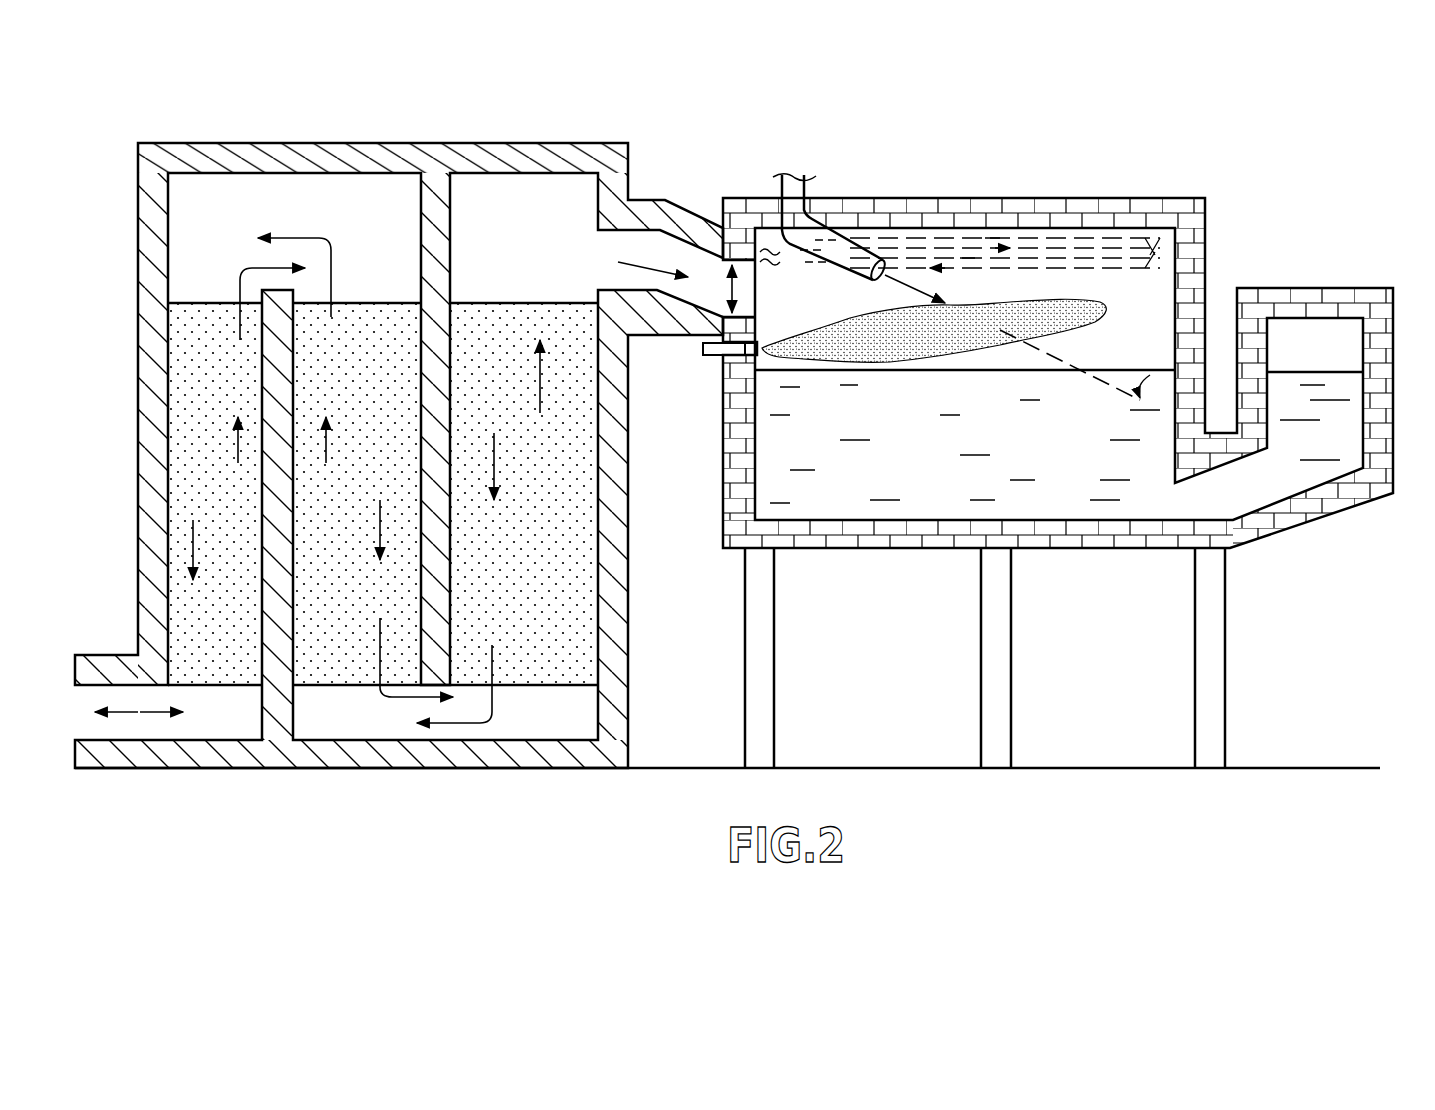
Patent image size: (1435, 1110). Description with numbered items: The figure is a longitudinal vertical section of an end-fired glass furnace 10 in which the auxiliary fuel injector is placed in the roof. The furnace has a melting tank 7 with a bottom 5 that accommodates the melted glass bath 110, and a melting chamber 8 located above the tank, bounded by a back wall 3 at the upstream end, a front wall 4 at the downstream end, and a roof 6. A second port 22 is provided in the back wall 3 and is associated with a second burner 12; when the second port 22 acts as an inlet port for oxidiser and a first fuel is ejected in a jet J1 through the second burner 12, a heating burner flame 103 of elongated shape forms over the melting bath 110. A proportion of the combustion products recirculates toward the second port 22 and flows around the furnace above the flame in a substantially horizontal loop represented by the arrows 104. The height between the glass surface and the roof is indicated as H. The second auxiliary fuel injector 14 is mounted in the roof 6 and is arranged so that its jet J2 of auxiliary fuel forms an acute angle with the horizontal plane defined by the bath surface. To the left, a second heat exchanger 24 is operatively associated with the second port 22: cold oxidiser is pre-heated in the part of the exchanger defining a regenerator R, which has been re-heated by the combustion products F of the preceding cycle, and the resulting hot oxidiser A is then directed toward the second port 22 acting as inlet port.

The back wall 3 is at (738, 481).
The front wall 4 is at (1197, 264).
The bottom 5 is at (868, 535).
The roof 6 is at (944, 200).
The melting tank 7 is at (1185, 410).
The melting chamber 8 is at (1213, 213).
The end-fired glass furnace 10 is at (1053, 188).
The second burner 12 is at (704, 352).
The second auxiliary fuel injector 14 is at (806, 189).
The second port 22 is at (745, 316).
The second heat exchanger 24 is at (469, 143).
The heating burner flame 103 is at (853, 352).
The recirculation of combustion products 104 is at (1063, 268).
The melted glass bath 110 is at (1032, 455).
The hot oxidiser A is at (540, 385).
The combustion products F is at (200, 538).
The height between glass surface and furnace roof H is at (746, 289).
The regenerator R is at (224, 215).
The jet of first fuel J1 is at (786, 358).
The jet of auxiliary fuel J2 is at (903, 280).